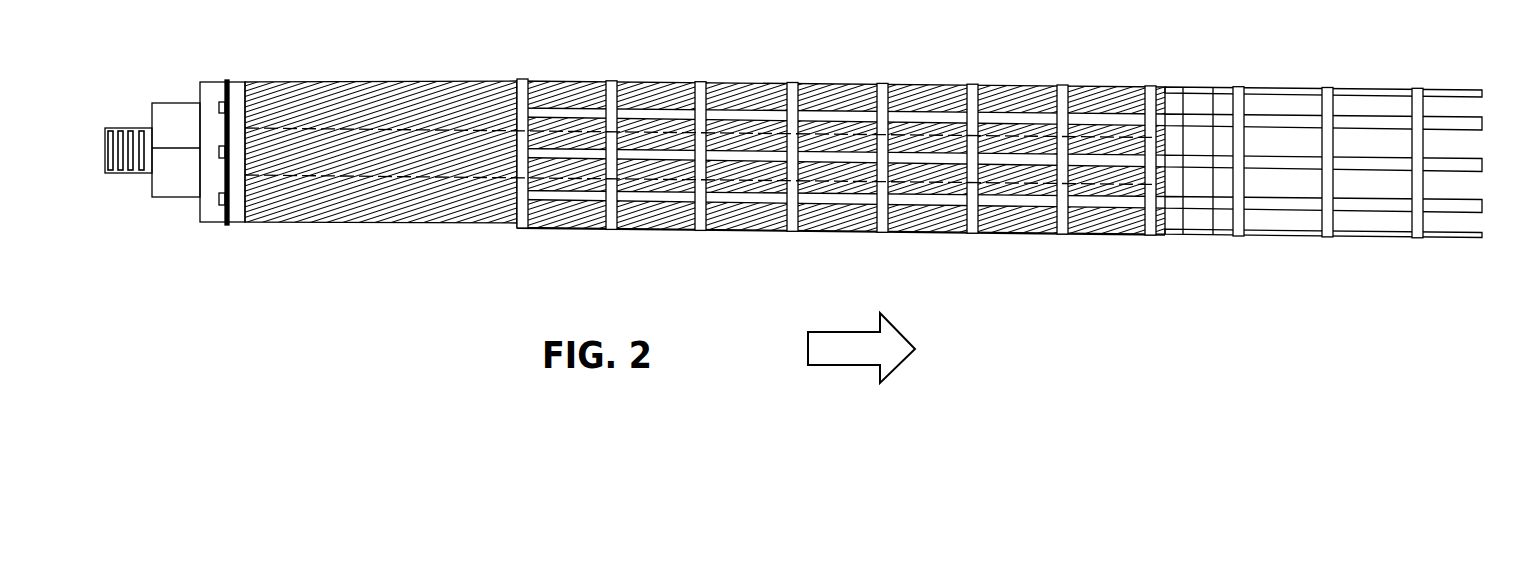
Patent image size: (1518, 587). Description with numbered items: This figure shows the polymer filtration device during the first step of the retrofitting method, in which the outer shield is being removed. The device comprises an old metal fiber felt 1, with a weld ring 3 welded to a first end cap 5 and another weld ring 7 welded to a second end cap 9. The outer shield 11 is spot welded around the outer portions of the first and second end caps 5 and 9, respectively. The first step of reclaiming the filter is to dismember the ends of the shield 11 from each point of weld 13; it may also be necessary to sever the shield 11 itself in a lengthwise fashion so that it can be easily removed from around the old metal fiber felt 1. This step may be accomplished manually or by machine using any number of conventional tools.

The old metal fiber felt 1 is at (300, 82).
The weld ring 3 is at (240, 100).
The first end cap 5 is at (176, 103).
The weld ring 7 is at (1175, 100).
The second end cap 9 is at (1198, 190).
The outer shield 11 is at (1346, 88).
The point of weld 13 is at (218, 201).